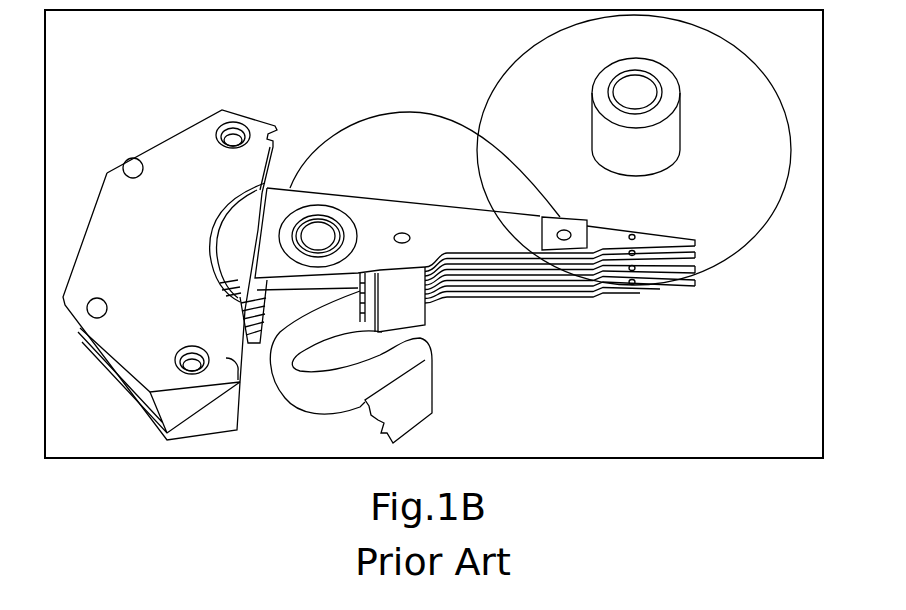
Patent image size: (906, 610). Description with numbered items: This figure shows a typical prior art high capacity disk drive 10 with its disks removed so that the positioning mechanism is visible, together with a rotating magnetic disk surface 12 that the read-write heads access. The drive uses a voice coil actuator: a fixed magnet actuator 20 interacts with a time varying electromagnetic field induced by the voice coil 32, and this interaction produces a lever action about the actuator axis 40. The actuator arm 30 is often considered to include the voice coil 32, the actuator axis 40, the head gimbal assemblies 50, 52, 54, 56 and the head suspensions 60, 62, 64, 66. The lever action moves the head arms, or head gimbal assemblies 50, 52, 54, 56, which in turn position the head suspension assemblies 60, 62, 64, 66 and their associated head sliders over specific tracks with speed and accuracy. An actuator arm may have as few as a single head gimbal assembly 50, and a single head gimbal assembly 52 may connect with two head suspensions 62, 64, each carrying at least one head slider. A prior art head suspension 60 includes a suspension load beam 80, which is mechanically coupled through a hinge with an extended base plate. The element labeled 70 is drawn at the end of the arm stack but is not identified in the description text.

The high capacity disk drive 10 is at (338, 60).
The rotating magnetic disk surface 12 is at (715, 53).
The actuator 20 is at (178, 153).
The actuator arm 30 is at (393, 218).
The voice coil 32 is at (237, 250).
The actuator axis 40 is at (318, 227).
The head gimbal assembly 50 is at (487, 223).
The head gimbal assembly 52 is at (535, 278).
The head gimbal assembly 54 is at (513, 293).
The head gimbal assembly 56 is at (495, 305).
The head suspension 60 is at (670, 238).
The head suspension 62 is at (698, 268).
The head suspension 64 is at (672, 276).
The head suspension 66 is at (657, 280).
The arm tip plate 70 is at (575, 222).
The suspension load beam 80 is at (670, 132).